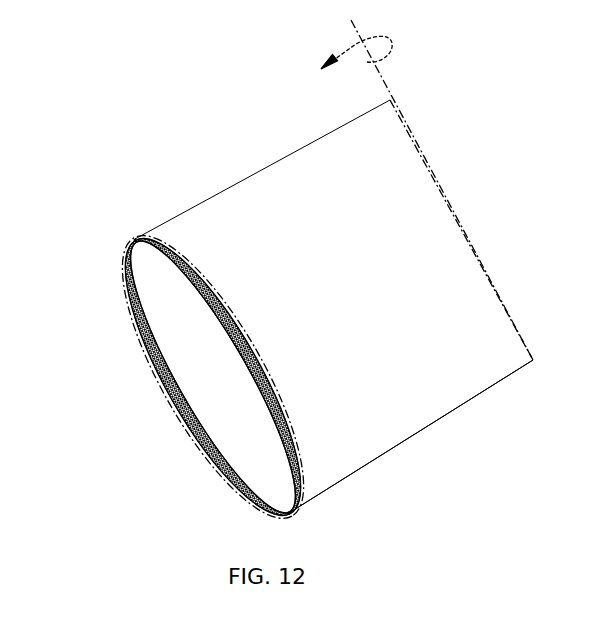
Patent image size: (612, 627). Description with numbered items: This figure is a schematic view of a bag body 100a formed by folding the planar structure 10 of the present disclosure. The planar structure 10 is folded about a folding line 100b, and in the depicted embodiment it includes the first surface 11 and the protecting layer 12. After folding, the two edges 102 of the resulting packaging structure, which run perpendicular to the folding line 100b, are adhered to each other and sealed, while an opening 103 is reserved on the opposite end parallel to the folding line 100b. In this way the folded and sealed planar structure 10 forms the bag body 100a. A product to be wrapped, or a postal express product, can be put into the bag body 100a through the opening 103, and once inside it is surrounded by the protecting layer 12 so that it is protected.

The planar structure 10 is at (288, 170).
The first surface 11 is at (128, 303).
The protecting layer 12 is at (240, 487).
The edges 102 is at (135, 240).
The opening 103 is at (208, 383).
The bag body 100a is at (417, 418).
The folding line 100b is at (473, 242).